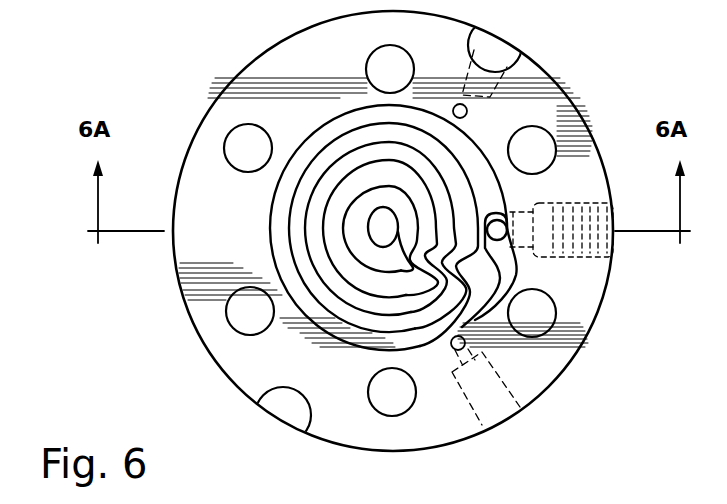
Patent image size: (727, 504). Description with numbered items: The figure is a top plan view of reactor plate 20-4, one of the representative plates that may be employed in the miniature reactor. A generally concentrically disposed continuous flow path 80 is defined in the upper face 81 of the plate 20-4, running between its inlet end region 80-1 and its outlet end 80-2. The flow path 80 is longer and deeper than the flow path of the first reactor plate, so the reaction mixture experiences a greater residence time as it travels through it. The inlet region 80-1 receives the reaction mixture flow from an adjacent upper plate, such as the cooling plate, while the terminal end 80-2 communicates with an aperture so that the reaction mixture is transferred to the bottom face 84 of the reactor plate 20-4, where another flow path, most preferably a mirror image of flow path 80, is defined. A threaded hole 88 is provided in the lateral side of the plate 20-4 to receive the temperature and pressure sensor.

The reactor plate 20-4 is at (144, 377).
The flow path 80 is at (272, 236).
The inlet end region 80-1 is at (388, 228).
The outlet end 80-2 is at (497, 200).
The upper face 81 is at (349, 395).
The bottom face 84 is at (502, 235).
The threaded hole 88 is at (615, 238).